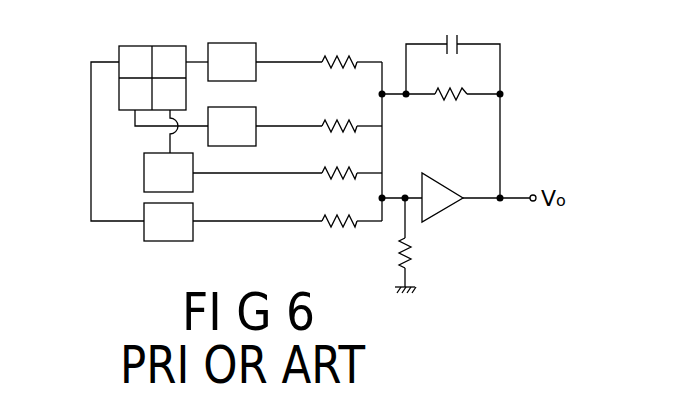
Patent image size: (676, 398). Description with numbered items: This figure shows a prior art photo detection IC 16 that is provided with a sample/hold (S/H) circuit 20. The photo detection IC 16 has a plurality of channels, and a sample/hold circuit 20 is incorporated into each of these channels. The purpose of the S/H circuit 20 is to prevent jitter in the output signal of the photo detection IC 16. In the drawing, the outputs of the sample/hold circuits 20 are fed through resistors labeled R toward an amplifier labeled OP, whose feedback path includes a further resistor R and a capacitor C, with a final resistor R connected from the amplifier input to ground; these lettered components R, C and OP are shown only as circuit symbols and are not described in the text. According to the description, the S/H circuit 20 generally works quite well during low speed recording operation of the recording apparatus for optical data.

The photo detection IC 16 is at (145, 45).
The sample/hold (S/H) circuit 20 is at (245, 43).
The resistor R is at (346, 160).
The capacitor C is at (453, 103).
The operational amplifier OP is at (456, 197).